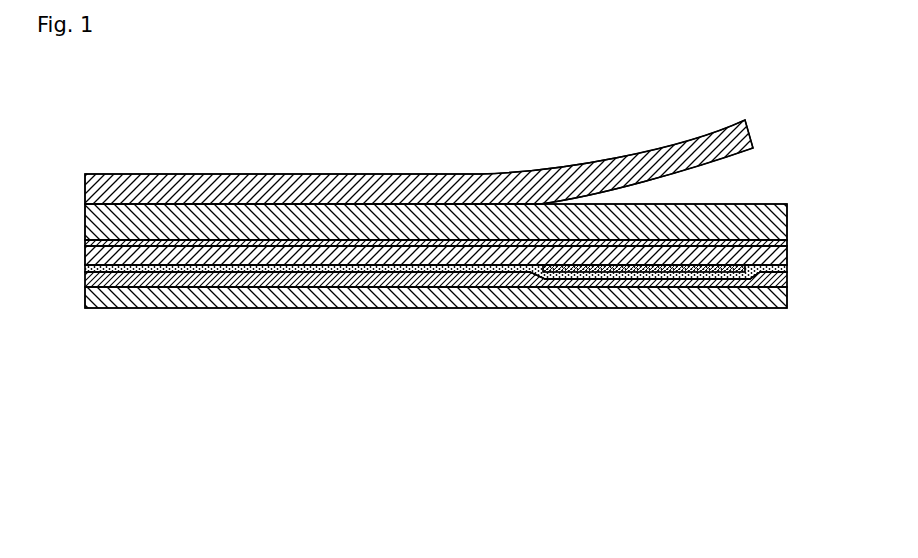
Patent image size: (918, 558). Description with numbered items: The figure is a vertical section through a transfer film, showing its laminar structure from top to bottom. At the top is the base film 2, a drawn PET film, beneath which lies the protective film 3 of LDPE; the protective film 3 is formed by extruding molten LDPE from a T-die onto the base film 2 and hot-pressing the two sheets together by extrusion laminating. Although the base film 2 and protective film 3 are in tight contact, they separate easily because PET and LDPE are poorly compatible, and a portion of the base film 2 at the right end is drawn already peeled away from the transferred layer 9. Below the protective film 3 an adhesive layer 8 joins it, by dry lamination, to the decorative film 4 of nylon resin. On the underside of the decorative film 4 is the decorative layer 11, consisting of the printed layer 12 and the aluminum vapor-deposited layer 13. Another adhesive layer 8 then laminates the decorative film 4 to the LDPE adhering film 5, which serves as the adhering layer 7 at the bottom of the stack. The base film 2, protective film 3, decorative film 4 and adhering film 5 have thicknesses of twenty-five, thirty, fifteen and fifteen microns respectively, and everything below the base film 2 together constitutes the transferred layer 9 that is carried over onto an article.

The base film 2 is at (657, 163).
The protective film 3 is at (168, 221).
The decorative film 4 is at (310, 256).
The adhering film 5 is at (436, 342).
The adhering layer 7 is at (185, 297).
The adhesive layer 8 is at (247, 243).
The transferred layer 9 is at (471, 301).
The decorative layer 11 is at (436, 399).
The printed layer 12 is at (630, 268).
The aluminum vapor-deposited layer 13 is at (425, 266).